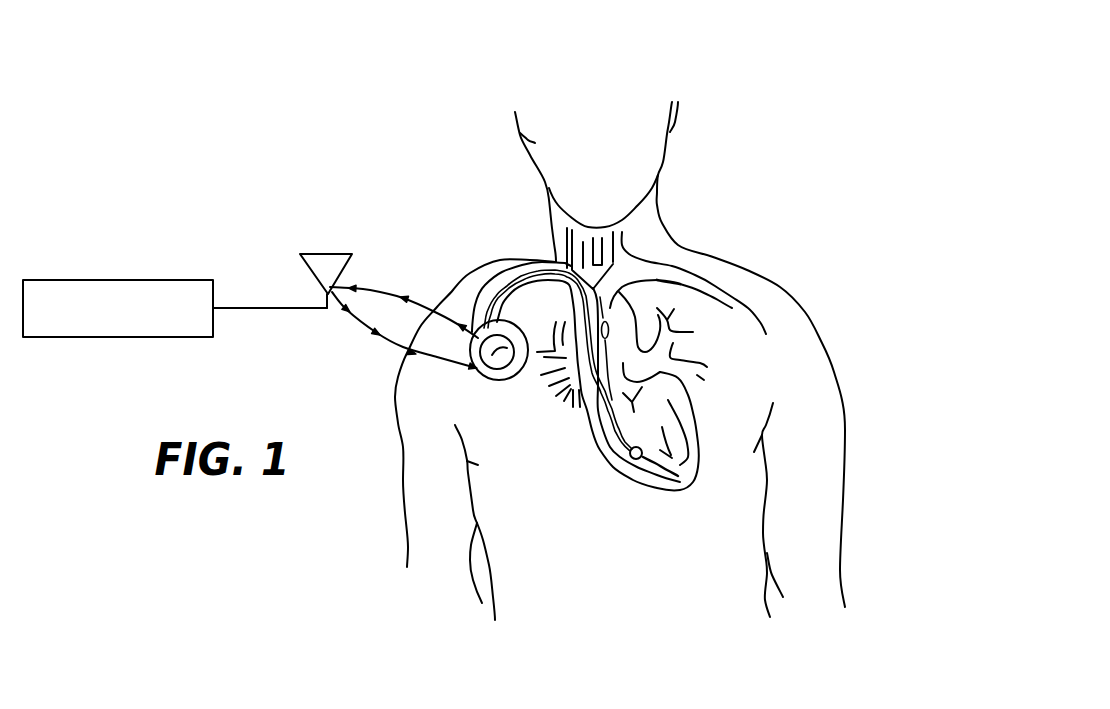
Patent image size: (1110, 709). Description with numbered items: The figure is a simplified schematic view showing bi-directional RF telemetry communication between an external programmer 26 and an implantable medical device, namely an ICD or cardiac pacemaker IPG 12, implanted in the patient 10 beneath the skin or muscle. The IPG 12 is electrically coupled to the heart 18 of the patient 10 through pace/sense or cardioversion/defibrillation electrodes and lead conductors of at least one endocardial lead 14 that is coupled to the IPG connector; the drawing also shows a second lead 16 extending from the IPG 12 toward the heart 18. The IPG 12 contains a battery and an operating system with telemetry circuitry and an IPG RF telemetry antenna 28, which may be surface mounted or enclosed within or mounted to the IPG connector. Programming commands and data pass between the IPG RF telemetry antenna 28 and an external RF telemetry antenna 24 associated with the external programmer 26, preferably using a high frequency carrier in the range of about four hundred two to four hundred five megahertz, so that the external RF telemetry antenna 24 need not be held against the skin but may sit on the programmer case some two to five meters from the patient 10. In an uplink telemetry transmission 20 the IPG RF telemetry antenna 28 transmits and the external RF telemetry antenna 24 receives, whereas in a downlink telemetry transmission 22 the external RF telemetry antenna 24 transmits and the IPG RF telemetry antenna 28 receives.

The patient 10 is at (688, 78).
The IPG 12 is at (510, 378).
The endocardial lead 14 is at (513, 281).
The lead 16 is at (563, 263).
The heart 18 is at (621, 475).
The uplink telemetry transmission 20 is at (412, 302).
The downlink telemetry transmission 22 is at (437, 357).
The external RF telemetry antenna 24 is at (327, 291).
The external programmer 26 is at (110, 280).
The IPG RF telemetry antenna 28 is at (517, 316).